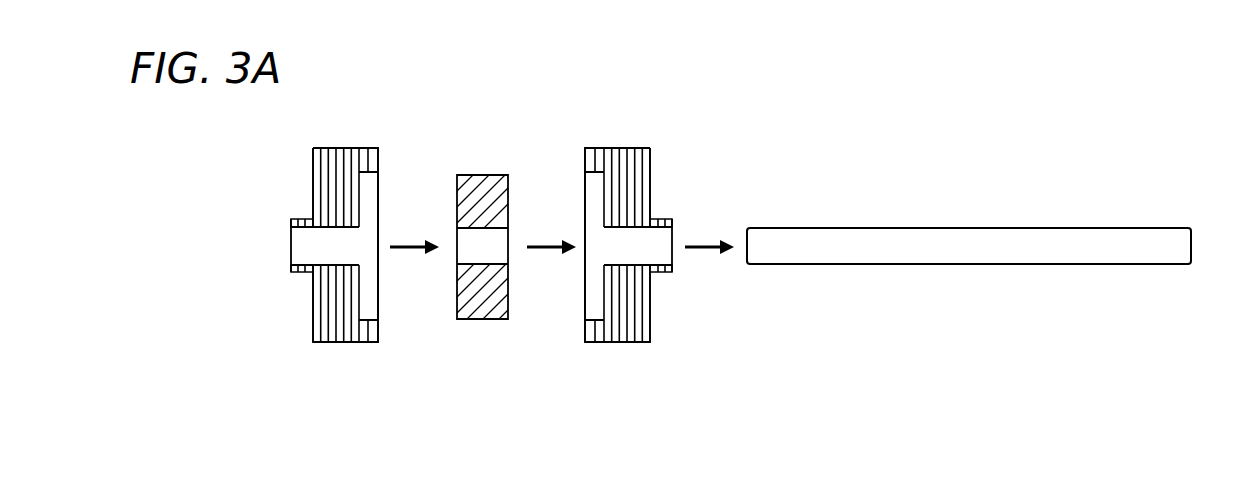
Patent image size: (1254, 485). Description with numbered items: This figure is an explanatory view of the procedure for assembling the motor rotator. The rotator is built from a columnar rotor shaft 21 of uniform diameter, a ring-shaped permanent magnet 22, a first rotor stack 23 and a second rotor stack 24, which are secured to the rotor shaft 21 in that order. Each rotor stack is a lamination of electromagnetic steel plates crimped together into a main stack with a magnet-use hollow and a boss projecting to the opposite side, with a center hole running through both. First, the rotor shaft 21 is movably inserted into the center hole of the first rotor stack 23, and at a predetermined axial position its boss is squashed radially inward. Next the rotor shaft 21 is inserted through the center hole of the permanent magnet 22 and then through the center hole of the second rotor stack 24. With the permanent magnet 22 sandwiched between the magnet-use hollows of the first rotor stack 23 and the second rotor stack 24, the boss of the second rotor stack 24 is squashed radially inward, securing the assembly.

The rotor shaft 21 is at (790, 228).
The permanent magnet 22 is at (485, 320).
The first rotor stack 23 is at (654, 242).
The second rotor stack 24 is at (323, 242).